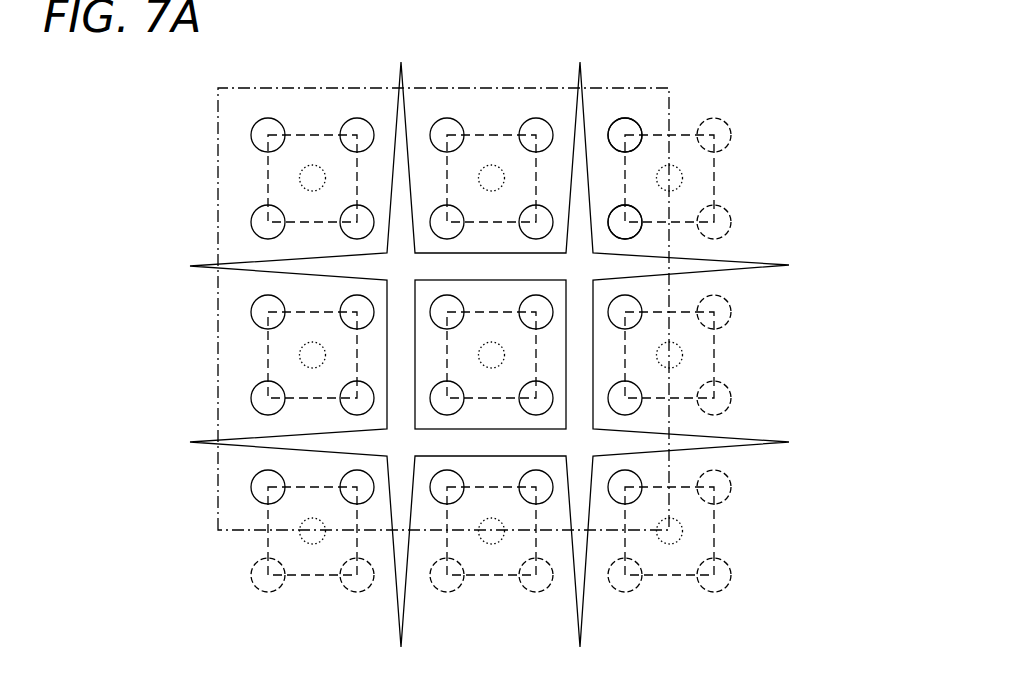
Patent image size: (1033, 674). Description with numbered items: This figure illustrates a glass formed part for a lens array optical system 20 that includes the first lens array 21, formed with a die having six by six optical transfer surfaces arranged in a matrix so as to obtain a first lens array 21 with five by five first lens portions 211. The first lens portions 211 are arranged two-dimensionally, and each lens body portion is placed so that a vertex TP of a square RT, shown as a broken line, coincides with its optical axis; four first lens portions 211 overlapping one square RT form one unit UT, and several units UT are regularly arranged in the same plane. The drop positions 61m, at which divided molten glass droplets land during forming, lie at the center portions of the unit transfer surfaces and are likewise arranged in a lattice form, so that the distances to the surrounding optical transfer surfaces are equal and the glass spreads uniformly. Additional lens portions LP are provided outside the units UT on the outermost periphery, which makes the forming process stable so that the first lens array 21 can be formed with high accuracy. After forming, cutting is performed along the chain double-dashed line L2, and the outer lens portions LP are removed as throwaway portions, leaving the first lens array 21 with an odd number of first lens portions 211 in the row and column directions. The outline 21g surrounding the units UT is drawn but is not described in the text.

The lens array optical system 20 is at (498, 332).
The first lens array 21 is at (498, 332).
The groove 21g is at (250, 262).
The first lens portion 211 is at (262, 133).
The chain double-dashed line L2 is at (217, 345).
The unit UT is at (320, 126).
The vertex TP is at (627, 135).
The additional lens portion LP is at (728, 137).
The drop position 61m is at (671, 176).
The square RT is at (716, 178).